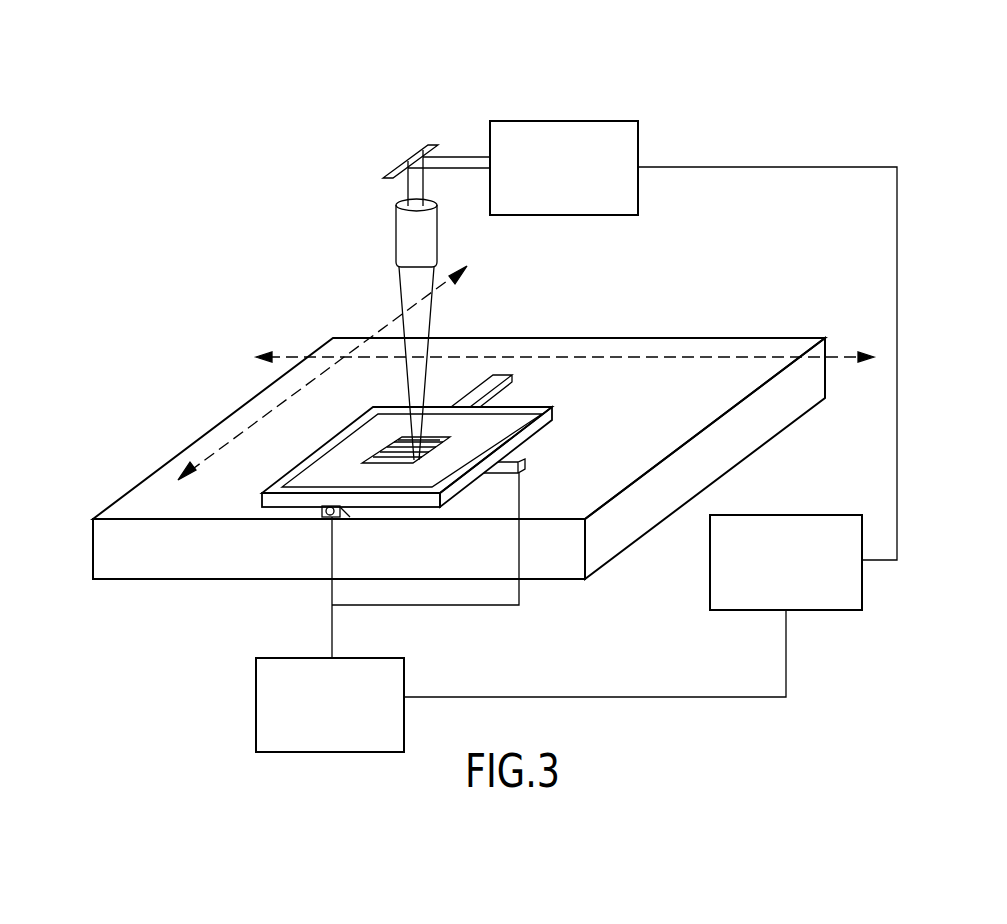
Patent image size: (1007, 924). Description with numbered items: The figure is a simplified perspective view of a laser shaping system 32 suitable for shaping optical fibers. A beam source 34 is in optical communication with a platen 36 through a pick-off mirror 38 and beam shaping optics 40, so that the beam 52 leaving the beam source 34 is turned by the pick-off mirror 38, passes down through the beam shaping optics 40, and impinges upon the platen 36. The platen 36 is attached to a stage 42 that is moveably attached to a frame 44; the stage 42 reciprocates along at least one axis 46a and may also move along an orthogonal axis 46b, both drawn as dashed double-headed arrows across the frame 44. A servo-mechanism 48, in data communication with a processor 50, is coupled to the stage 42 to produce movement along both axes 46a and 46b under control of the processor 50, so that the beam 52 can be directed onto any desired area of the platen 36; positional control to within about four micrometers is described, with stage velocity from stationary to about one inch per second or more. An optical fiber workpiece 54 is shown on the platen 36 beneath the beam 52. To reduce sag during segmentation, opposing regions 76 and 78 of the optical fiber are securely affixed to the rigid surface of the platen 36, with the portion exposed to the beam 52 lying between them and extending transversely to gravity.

The system 32 is at (480, 80).
The beam source 34 is at (650, 139).
The platen 36 is at (510, 418).
The pick-off mirror 38 is at (412, 154).
The beam shaping optics 40 is at (396, 235).
The stage 42 is at (528, 430).
The frame 44 is at (93, 548).
The axis 46a is at (386, 324).
The axis 46b is at (628, 355).
The servo-mechanism 48 is at (405, 669).
The processor 50 is at (710, 596).
The beam 52 is at (423, 311).
The substrate 54 is at (400, 443).
The region 76 is at (387, 446).
The region 78 is at (425, 447).